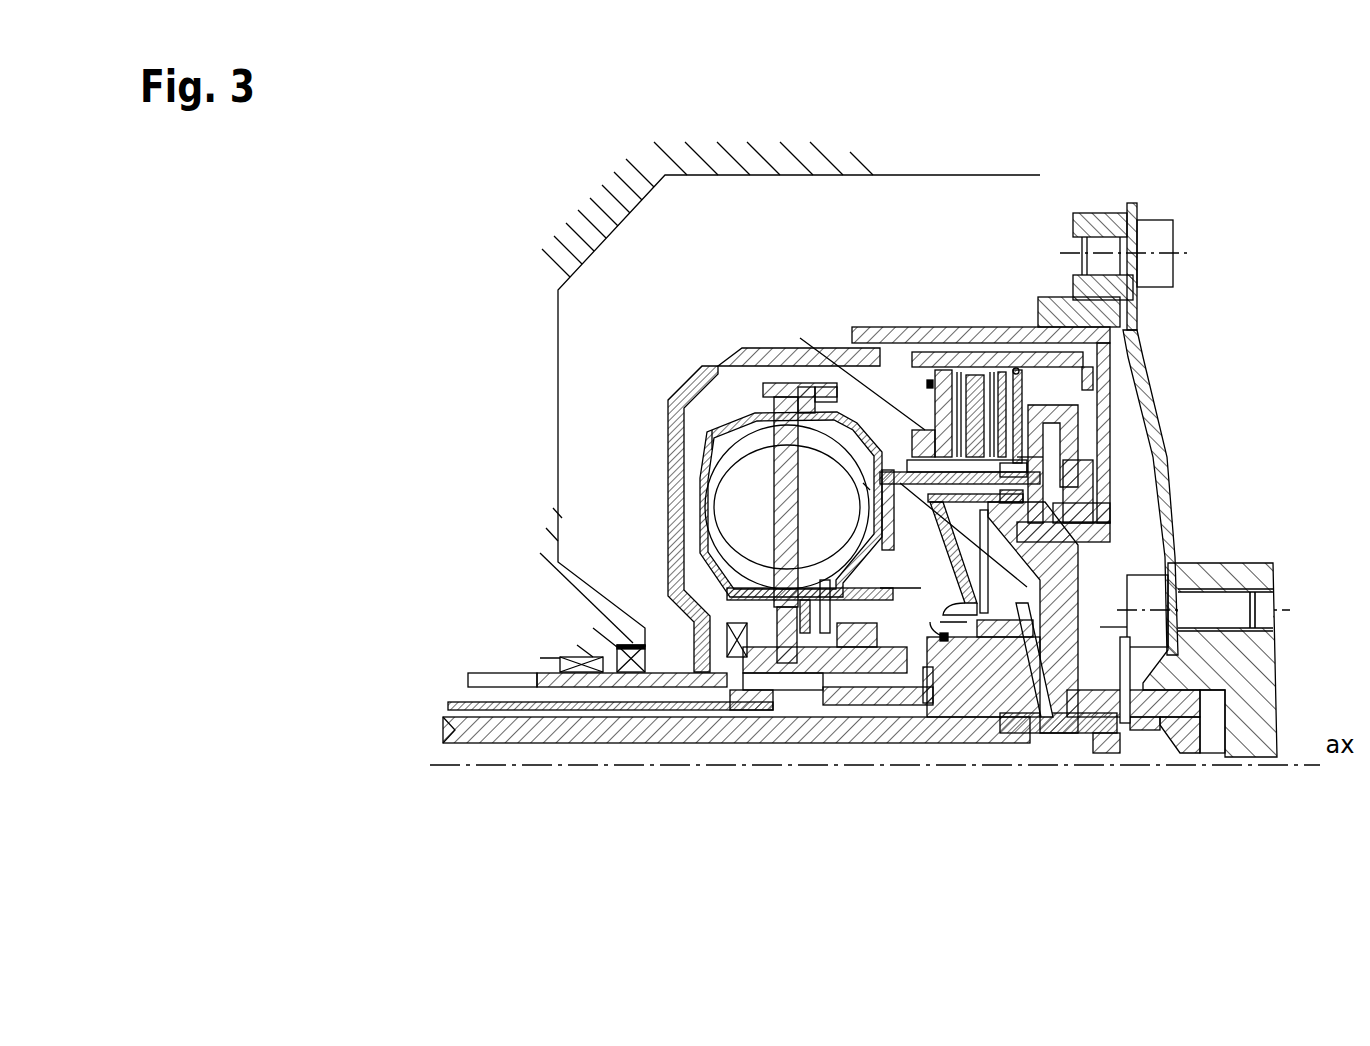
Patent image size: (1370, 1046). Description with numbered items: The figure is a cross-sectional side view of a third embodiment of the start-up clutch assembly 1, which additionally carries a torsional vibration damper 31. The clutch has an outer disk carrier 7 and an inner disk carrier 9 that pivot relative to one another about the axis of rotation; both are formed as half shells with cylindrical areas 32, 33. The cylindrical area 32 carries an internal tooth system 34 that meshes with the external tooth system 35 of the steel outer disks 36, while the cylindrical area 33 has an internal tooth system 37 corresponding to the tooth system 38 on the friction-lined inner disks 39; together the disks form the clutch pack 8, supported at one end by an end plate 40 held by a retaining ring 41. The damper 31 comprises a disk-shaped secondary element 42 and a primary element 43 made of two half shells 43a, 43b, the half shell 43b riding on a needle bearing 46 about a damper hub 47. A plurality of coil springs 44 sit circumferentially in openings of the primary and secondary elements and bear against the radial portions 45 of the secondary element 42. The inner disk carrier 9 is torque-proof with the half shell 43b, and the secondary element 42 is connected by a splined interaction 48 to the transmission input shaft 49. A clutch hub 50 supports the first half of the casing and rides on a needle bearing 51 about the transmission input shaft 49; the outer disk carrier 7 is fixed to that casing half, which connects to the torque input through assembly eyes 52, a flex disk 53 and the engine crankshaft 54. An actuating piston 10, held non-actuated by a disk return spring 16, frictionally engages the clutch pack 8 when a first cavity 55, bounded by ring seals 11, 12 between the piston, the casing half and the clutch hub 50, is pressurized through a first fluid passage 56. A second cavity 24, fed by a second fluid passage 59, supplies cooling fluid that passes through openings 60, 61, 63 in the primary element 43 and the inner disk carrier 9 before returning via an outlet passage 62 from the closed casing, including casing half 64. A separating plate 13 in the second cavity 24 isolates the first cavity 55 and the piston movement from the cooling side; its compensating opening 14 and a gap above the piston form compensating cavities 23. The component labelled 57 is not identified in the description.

The start-up clutch 1 is at (1078, 290).
The outer disk carrier 7 is at (992, 372).
The clutch pack 8 is at (975, 375).
The inner disk carrier 9 is at (1000, 452).
The actuating piston 10 is at (1045, 430).
The ring seal 11 is at (1030, 533).
The ring seal 12 is at (1123, 753).
The separating plate 13 is at (1190, 640).
The compensating opening 14 is at (1012, 720).
The disk return spring 16 is at (1127, 605).
The compensating cavities 23 is at (727, 362).
The second cavity 24 is at (727, 598).
The torsional vibration damper 31 is at (712, 413).
The cylindrical area 32 is at (953, 327).
The cylindrical area 33 is at (1025, 495).
The internal tooth system 34 is at (1020, 370).
The external tooth system 35 is at (1008, 370).
The outer disks 36 is at (1035, 398).
The internal tooth system 37 is at (1027, 477).
The tooth system 38 is at (1017, 457).
The inner disks 39 is at (1022, 378).
The end plate 40 is at (855, 390).
The retaining ring 41 is at (928, 352).
The secondary element 42 is at (783, 520).
The primary element 43 is at (780, 370).
The half shell 43a is at (715, 430).
The half shell 43b is at (863, 483).
The coil springs 44 is at (780, 488).
The radial portions 45 is at (783, 533).
The needle bearing 46 is at (886, 640).
The damper hub 47 is at (813, 663).
The splined interaction 48 is at (913, 733).
The transmission input shaft 49 is at (720, 728).
The clutch hub 50 is at (970, 690).
The needle bearing 51 is at (948, 690).
The assembly eyes 52 is at (1143, 290).
The flex disk 53 is at (1150, 392).
The engine crankshaft 54 is at (1238, 577).
The first cavity 55 is at (1197, 588).
The first fluid passage 56 is at (1075, 653).
The sleeve 57 is at (935, 660).
The second fluid passage 59 is at (653, 693).
The opening 60 is at (825, 400).
The opening 61 is at (923, 375).
The outlet passage 62 is at (867, 370).
The opening 63 is at (883, 690).
The casing 64 is at (673, 550).